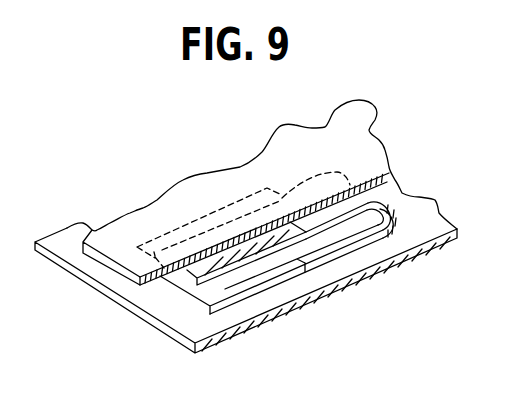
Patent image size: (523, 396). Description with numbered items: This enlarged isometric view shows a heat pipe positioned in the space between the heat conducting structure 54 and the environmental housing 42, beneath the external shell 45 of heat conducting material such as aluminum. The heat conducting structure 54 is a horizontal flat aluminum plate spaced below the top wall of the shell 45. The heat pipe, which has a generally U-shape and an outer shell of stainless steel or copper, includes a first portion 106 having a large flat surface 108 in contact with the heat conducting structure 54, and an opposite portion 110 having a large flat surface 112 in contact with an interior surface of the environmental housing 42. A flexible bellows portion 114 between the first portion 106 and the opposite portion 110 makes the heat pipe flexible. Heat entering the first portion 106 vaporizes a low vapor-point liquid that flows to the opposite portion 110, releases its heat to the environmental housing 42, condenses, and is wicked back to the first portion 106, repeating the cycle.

The environmental housing 42 is at (160, 163).
The external shell 45 is at (143, 222).
The heat conducting structure 54 is at (332, 296).
The first portion 106 is at (345, 250).
The large flat surface 108 is at (237, 303).
The opposite portion 110 is at (333, 196).
The large flat surface 112 is at (227, 258).
The flexible bellows portion 114 is at (390, 212).